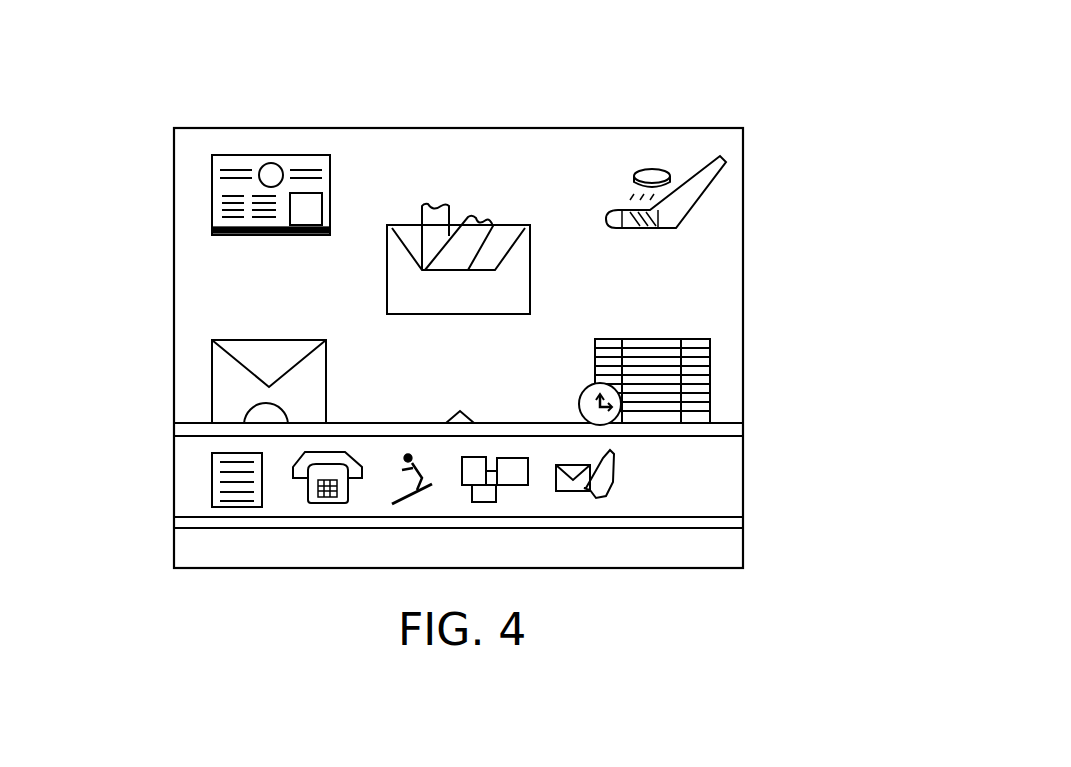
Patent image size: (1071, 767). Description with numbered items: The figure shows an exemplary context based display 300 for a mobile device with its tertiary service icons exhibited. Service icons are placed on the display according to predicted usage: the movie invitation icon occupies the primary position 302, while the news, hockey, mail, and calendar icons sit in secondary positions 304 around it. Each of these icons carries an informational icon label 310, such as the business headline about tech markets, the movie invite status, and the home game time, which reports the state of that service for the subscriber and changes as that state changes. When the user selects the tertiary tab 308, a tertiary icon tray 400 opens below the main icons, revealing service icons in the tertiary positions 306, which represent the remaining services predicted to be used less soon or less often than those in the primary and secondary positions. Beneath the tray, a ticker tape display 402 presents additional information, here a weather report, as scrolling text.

The context based display 300 is at (715, 82).
The primary position 302 is at (494, 185).
The secondary position 304 is at (204, 177).
The tertiary position 306 is at (313, 507).
The tertiary tab 308 is at (484, 412).
The informational icon label 310 is at (204, 256).
The tertiary icon tray 400 is at (712, 480).
The ticker tape display 402 is at (715, 547).